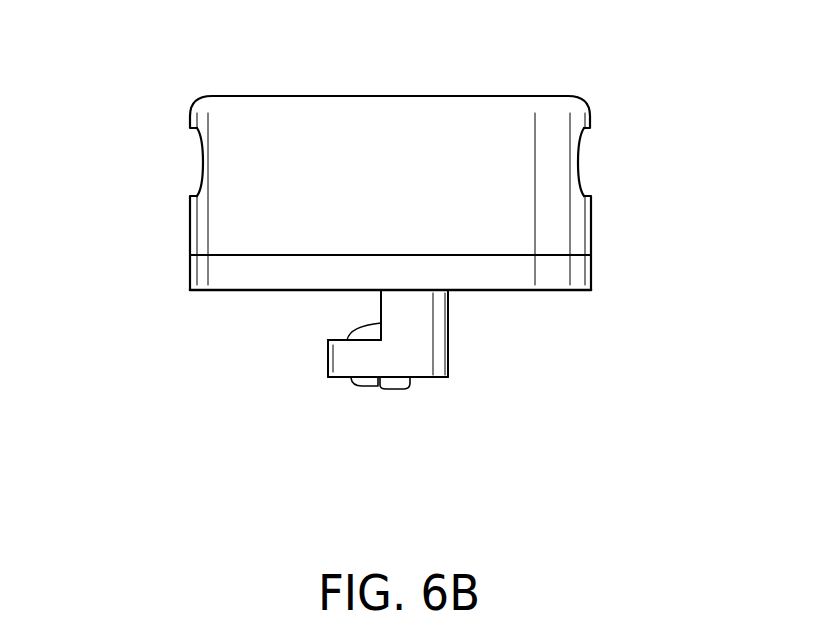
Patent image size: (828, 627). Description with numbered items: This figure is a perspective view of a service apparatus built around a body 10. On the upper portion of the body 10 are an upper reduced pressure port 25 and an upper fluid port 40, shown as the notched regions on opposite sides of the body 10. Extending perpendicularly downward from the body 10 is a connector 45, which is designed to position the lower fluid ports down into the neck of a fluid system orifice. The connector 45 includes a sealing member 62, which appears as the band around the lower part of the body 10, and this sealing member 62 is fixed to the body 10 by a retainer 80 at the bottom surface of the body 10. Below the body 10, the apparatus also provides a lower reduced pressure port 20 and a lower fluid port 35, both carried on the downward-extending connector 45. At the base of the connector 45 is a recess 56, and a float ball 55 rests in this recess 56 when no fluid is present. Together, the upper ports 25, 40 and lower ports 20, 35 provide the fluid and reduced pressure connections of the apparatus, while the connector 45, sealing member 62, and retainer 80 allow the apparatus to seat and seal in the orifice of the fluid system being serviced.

The body 10 is at (430, 96).
The upper reduced pressure port 25 is at (200, 162).
The upper fluid port 40 is at (583, 158).
The sealing member 62 is at (593, 270).
The retainer 80 is at (470, 292).
The lower fluid port 35 is at (427, 380).
The connector 45 is at (450, 333).
The lower reduced pressure port 20 is at (352, 313).
The recess 56 is at (328, 378).
The float ball 55 is at (368, 388).